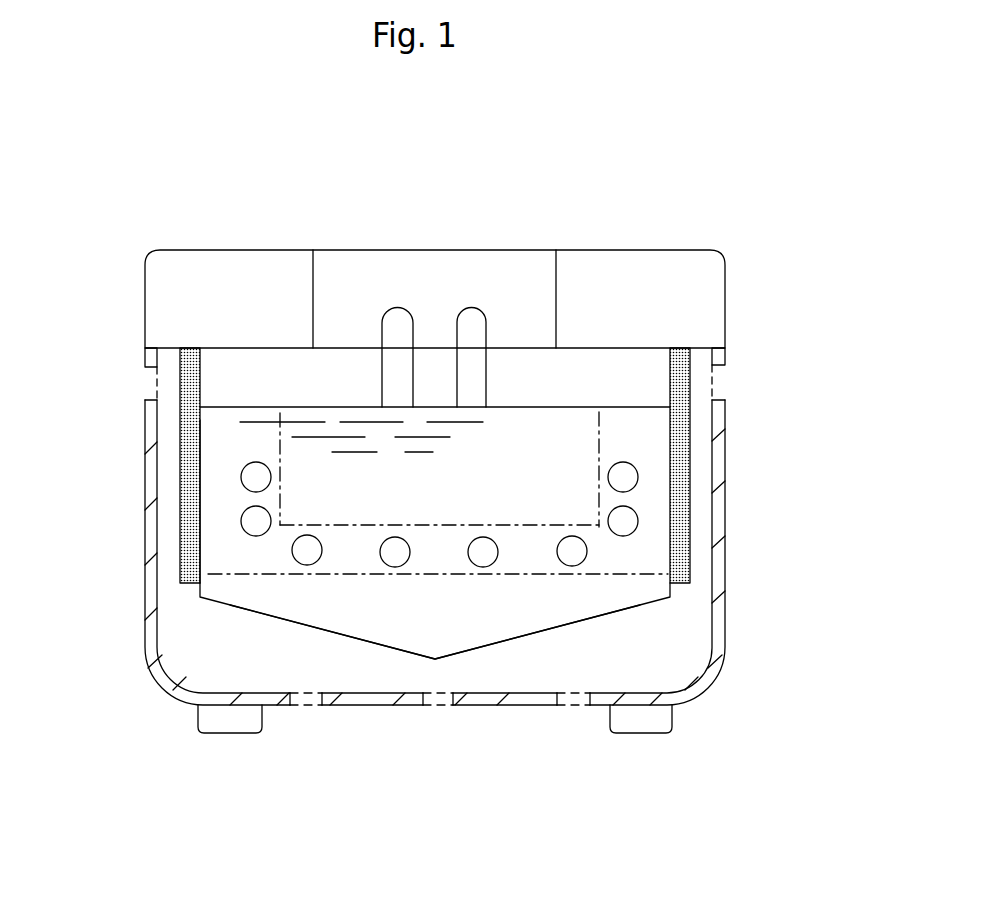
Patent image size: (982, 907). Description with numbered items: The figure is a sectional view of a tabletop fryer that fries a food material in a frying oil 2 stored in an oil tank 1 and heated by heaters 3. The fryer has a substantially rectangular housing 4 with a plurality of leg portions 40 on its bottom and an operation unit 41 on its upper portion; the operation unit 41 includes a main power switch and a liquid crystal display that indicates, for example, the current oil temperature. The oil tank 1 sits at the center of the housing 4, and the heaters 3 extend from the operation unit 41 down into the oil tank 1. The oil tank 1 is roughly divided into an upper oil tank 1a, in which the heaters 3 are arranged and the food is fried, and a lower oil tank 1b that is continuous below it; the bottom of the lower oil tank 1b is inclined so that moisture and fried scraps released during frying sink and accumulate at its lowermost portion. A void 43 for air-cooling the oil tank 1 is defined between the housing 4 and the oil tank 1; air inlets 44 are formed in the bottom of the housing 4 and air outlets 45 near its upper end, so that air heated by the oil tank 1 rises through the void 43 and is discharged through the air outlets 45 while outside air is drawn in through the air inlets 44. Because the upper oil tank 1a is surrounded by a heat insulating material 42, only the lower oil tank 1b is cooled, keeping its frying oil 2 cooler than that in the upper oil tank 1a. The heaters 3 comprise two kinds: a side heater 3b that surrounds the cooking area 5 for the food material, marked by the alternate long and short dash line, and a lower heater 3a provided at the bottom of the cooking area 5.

The oil tank 1 is at (360, 645).
The upper oil tank 1a is at (218, 540).
The lower oil tank 1b is at (294, 604).
The frying oil 2 is at (618, 423).
The heaters 3 is at (493, 191).
The lower heater 3a is at (470, 310).
The side heater 3b is at (397, 310).
The housing 4 is at (729, 619).
The cooking area 5 is at (597, 437).
The leg portions 40 is at (212, 726).
The operation unit 41 is at (690, 262).
The heat insulating material 42 is at (181, 440).
The void 43 is at (683, 653).
The air inlets 44 is at (293, 701).
The air outlets 45 is at (151, 372).